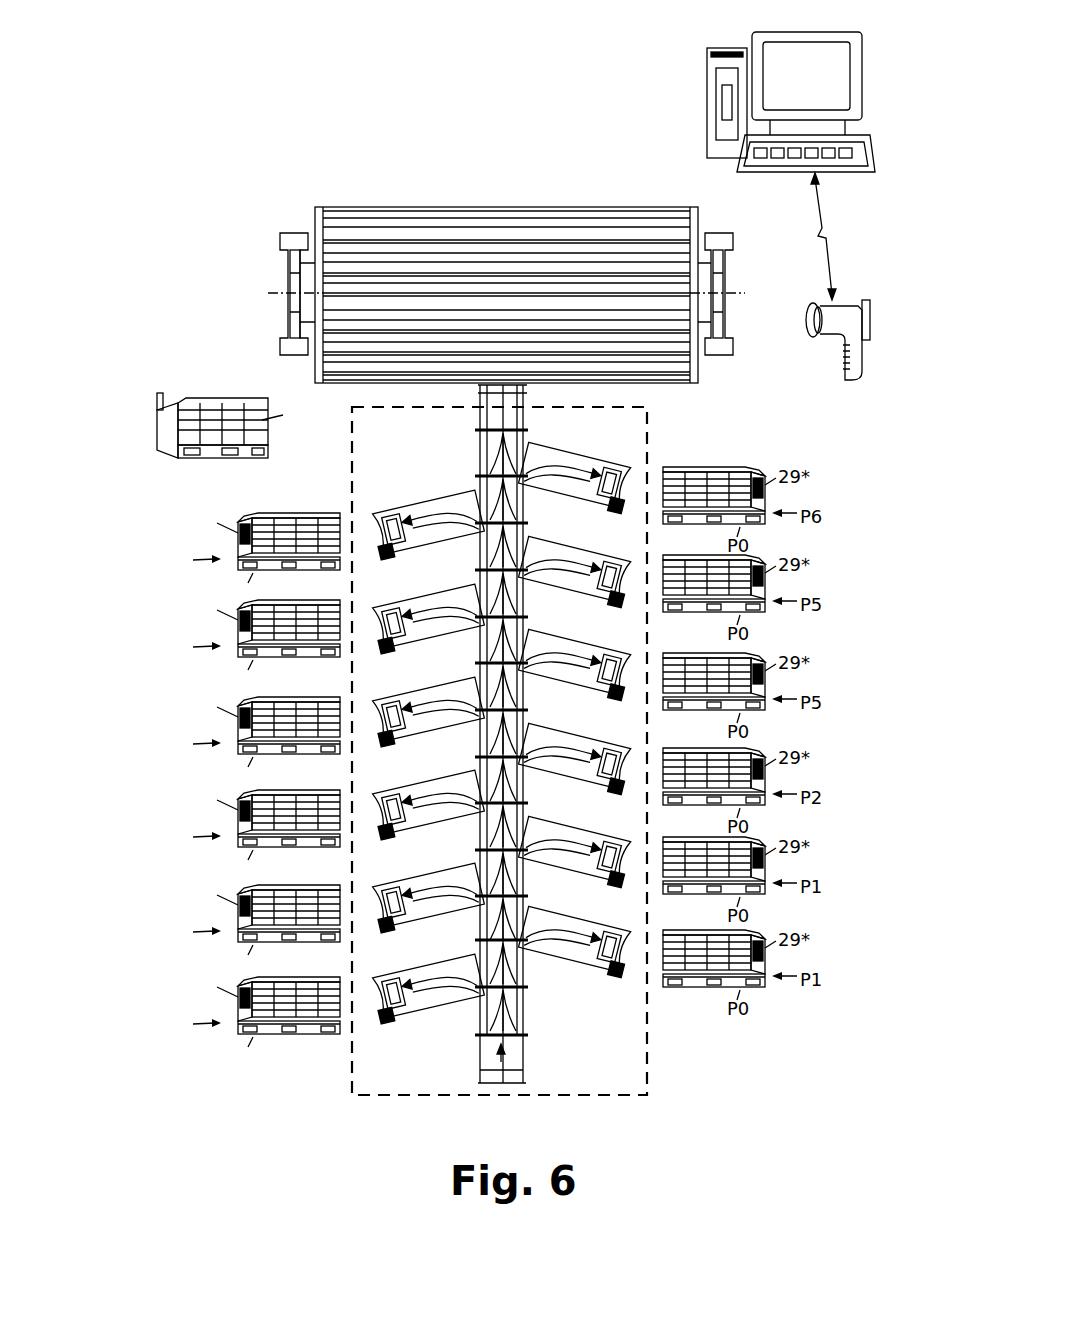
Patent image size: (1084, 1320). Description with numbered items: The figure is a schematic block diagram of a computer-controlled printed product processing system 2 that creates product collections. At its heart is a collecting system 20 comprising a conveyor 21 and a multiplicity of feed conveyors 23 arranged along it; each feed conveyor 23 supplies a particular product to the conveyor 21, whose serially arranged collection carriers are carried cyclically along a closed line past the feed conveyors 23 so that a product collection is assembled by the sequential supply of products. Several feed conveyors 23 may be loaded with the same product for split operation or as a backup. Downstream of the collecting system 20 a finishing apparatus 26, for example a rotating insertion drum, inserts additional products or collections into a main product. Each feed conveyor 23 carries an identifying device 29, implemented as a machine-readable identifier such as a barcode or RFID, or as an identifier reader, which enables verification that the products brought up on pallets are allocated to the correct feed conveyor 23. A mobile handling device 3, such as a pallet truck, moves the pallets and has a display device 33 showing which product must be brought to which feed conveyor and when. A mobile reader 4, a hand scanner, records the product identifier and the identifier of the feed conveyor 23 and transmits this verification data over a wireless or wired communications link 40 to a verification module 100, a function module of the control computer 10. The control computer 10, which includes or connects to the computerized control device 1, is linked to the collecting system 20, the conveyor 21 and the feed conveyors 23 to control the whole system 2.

The control device 1 is at (679, 103).
The verification module 100 is at (722, 76).
The control computer 10 is at (743, 102).
The communications link 40 is at (836, 236).
The mobile reader 4 is at (857, 403).
The apparatus for inserting additional products 26 is at (252, 331).
The display device 33 is at (168, 412).
The mobile handling device 3 is at (212, 422).
The collecting system 20 is at (652, 1042).
The conveyor 21 is at (480, 1052).
The feed conveyor 23 is at (502, 744).
The identifying device 29 is at (390, 1025).
The printed product processing system 2 is at (290, 1100).